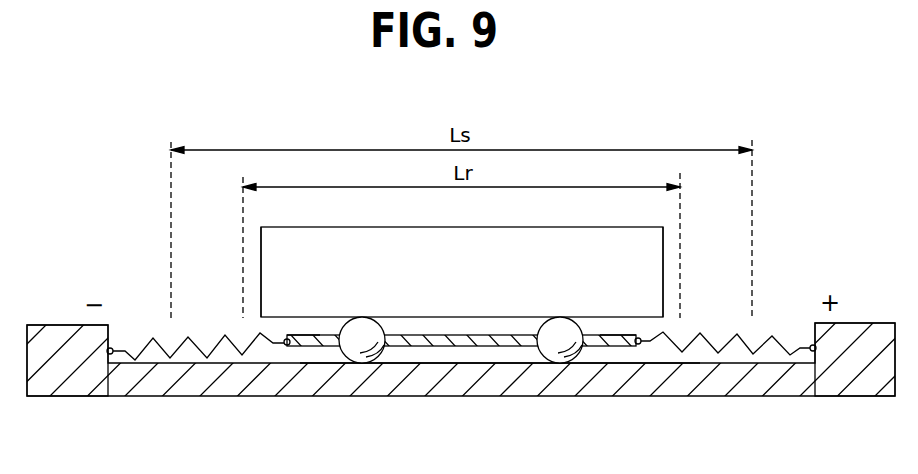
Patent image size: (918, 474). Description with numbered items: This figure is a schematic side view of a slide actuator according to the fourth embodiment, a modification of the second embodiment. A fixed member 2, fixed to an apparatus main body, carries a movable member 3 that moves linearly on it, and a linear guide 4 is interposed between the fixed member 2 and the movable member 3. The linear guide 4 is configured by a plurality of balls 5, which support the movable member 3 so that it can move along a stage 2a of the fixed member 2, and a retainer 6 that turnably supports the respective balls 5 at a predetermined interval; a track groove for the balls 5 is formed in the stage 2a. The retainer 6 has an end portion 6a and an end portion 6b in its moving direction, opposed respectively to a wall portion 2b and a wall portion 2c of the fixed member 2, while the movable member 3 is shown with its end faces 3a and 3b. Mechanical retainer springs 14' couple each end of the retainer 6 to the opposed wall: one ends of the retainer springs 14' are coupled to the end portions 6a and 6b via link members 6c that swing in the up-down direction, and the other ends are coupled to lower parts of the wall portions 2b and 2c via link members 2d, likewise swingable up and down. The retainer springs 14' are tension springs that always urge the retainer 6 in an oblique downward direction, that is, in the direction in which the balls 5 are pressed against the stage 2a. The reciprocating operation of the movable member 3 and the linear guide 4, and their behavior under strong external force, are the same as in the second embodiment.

The fixed member 2 is at (483, 397).
The stage 2a is at (598, 364).
The wall portion 2b is at (815, 352).
The wall portion 2c is at (108, 365).
The link member 2d is at (110, 348).
The movable member 3 is at (598, 227).
The right end face of movable body 3a is at (663, 237).
The left end face of movable body 3b is at (261, 245).
The linear guide 4 is at (430, 291).
The ball 5 is at (387, 326).
The retainer 6 is at (480, 335).
The end portion 6a is at (645, 338).
The end portion 6b is at (285, 338).
The link member 6c is at (289, 346).
The retainer spring 14' is at (461, 393).